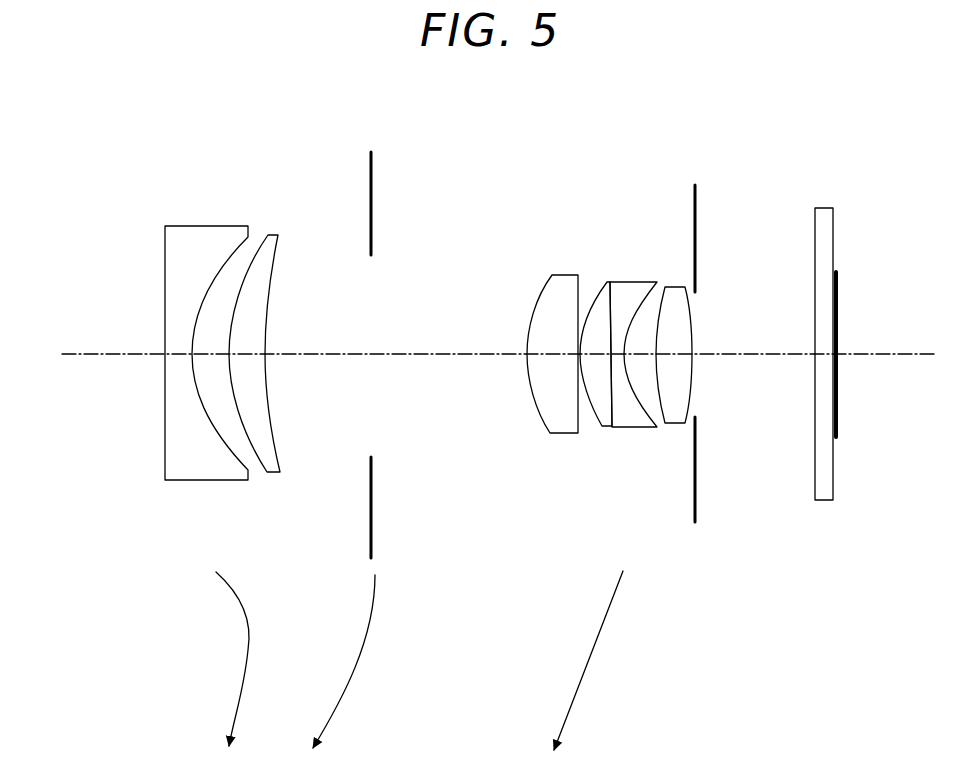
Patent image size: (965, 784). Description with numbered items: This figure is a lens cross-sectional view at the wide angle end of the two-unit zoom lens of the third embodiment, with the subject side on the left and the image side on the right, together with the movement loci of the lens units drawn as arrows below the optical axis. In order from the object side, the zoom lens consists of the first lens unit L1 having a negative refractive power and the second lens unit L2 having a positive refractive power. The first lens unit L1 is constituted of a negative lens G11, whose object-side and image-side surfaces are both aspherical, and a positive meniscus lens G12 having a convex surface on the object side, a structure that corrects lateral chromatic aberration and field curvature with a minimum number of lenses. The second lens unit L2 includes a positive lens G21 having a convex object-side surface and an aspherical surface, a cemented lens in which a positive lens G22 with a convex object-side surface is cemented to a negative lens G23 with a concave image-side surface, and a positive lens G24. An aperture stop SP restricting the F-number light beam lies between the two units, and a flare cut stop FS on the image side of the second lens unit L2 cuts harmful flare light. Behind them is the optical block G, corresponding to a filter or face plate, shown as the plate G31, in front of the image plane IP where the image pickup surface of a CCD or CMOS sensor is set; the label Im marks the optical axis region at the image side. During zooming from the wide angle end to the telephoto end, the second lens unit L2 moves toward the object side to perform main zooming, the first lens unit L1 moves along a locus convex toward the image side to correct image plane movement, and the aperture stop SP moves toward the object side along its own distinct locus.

The first lens unit L1 is at (262, 117).
The second lens unit L2 is at (687, 117).
The optical block G is at (835, 115).
The negative lens G11 is at (199, 248).
The positive meniscus lens G12 is at (272, 243).
The positive lens G21 is at (556, 278).
The positive lens G22 is at (587, 281).
The negative lens G23 is at (630, 281).
The positive lens G24 is at (675, 289).
The glass block G31 is at (823, 215).
The aperture stop SP is at (372, 178).
The flare cut stop FS is at (694, 493).
The image plane IP is at (838, 290).
The optical axis Im is at (498, 343).